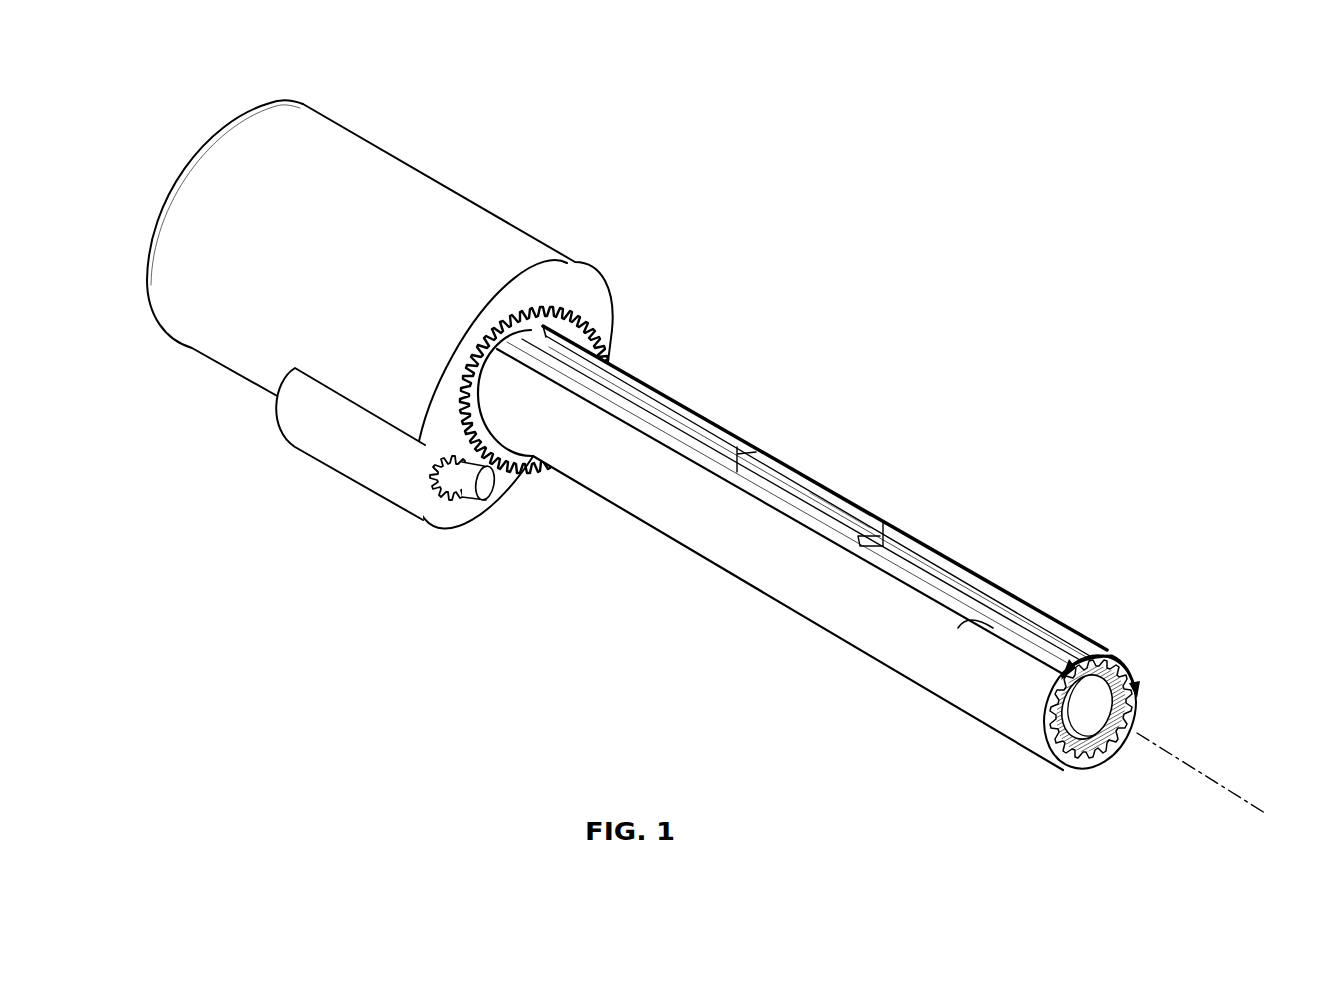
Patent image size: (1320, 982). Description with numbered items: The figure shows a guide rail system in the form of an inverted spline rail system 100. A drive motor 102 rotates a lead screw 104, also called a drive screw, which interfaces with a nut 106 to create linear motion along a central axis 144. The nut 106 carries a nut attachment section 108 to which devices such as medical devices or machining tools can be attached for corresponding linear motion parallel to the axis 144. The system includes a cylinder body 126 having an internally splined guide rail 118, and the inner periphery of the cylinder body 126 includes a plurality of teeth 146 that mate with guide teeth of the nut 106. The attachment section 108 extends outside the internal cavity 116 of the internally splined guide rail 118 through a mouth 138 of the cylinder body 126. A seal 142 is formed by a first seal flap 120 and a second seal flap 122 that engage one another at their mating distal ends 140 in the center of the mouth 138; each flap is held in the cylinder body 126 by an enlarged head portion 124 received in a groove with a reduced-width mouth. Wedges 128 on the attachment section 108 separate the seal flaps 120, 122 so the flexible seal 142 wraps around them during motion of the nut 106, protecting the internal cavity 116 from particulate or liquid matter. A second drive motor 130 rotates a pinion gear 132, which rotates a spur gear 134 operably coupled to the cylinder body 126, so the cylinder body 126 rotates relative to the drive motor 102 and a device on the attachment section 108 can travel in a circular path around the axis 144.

The inverted spline rail system 100 is at (1072, 160).
The drive motor 102 is at (352, 157).
The lead screw 104 is at (1098, 710).
The nut 106 is at (836, 482).
The nut attachment section 108 is at (838, 515).
The internal cavity 116 is at (1137, 693).
The internally splined guide rail 118 is at (1078, 768).
The first seal flap 120 is at (963, 624).
The second seal flap 122 is at (1015, 608).
The enlarged head portion 124 is at (1114, 657).
The cylinder body 126 is at (693, 530).
The wedges 128 is at (738, 450).
The second drive motor 130 is at (332, 455).
The pinion gear 132 is at (466, 490).
The spur gear 134 is at (585, 330).
The mouth 138 is at (1096, 645).
The mating distal ends 140 is at (958, 570).
The seal 142 is at (693, 428).
The central axis 144 is at (1205, 777).
The teeth 146 is at (1113, 743).